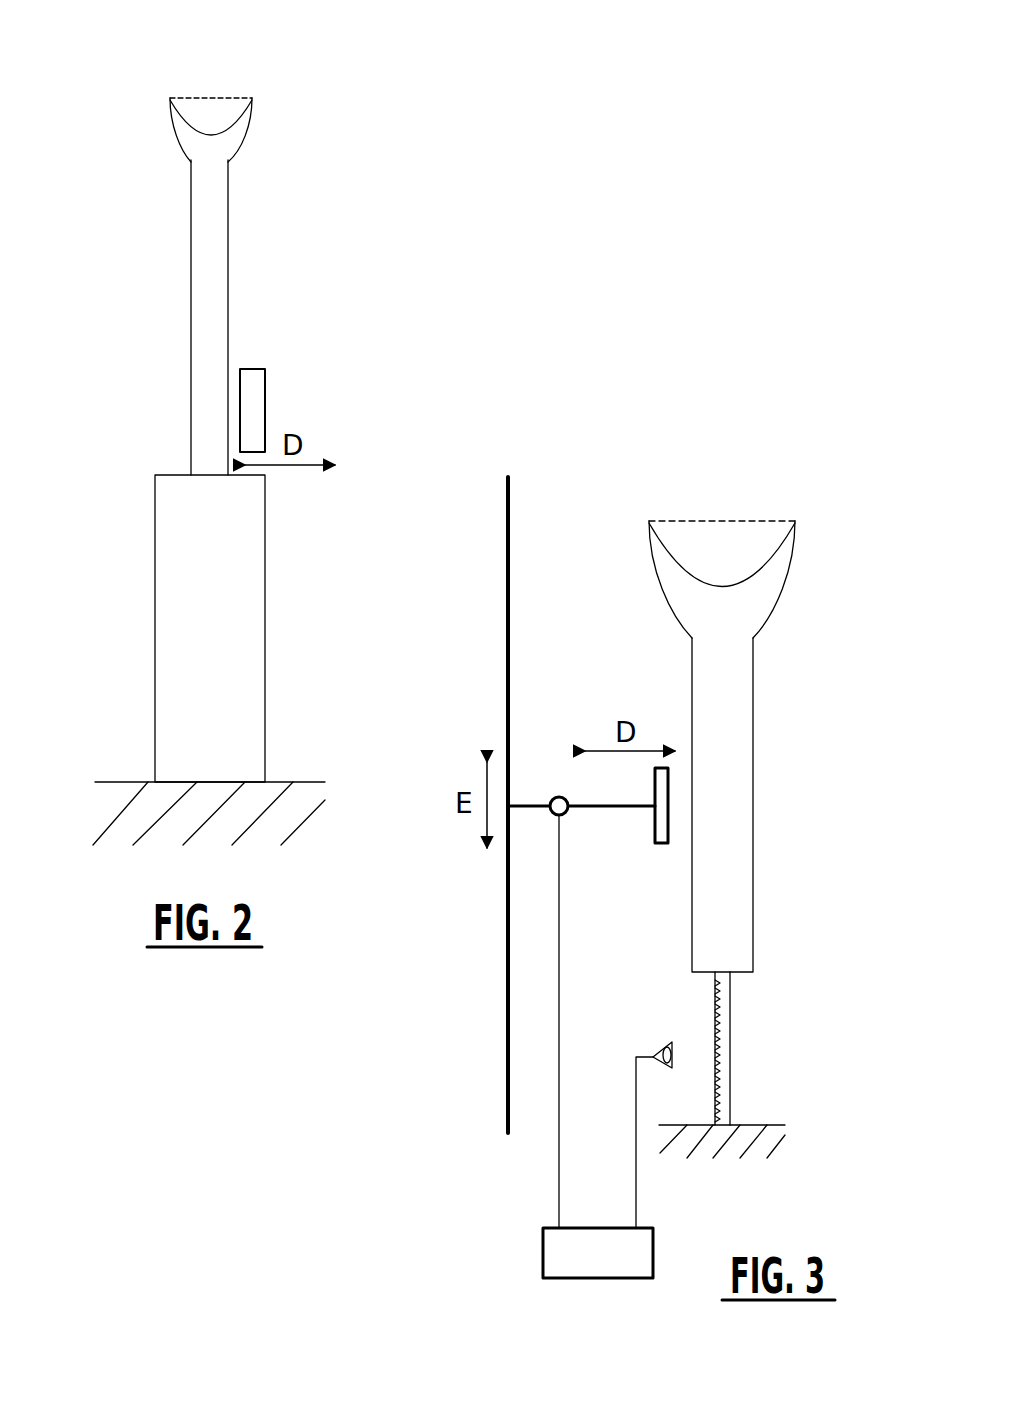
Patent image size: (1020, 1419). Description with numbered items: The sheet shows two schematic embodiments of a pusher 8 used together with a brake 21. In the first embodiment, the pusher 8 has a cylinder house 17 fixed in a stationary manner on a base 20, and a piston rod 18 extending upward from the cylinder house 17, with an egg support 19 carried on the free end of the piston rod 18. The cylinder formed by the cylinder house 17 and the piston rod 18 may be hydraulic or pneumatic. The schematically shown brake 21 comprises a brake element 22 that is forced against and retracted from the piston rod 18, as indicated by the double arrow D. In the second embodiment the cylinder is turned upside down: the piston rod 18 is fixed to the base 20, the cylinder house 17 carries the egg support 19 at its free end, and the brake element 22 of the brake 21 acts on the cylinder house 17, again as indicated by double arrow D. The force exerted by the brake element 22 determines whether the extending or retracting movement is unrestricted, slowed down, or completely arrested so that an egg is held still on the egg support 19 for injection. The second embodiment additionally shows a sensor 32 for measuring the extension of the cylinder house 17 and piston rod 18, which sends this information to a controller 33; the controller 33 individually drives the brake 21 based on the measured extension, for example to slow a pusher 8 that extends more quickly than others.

In FIG. 2, the pusher 8 is at (205, 394).
In FIG. 3, the pusher 8 is at (750, 772).
In FIG. 2, the cylinder house 17 is at (167, 583).
In FIG. 3, the cylinder house 17 is at (743, 720).
In FIG. 2, the piston rod 18 is at (217, 227).
In FIG. 3, the piston rod 18 is at (725, 1033).
In FIG. 2, the egg support 19 is at (210, 112).
In FIG. 3, the egg support 19 is at (715, 545).
In FIG. 2, the base 20 is at (117, 793).
In FIG. 3, the base 20 is at (748, 1127).
In FIG. 2, the brake 21 is at (299, 365).
In FIG. 3, the brake 21 is at (588, 998).
In FIG. 2, the brake element 22 is at (260, 405).
In FIG. 3, the brake element 22 is at (663, 838).
In FIG. 3, the sensor 32 is at (658, 1048).
In FIG. 3, the controller 33 is at (553, 1252).